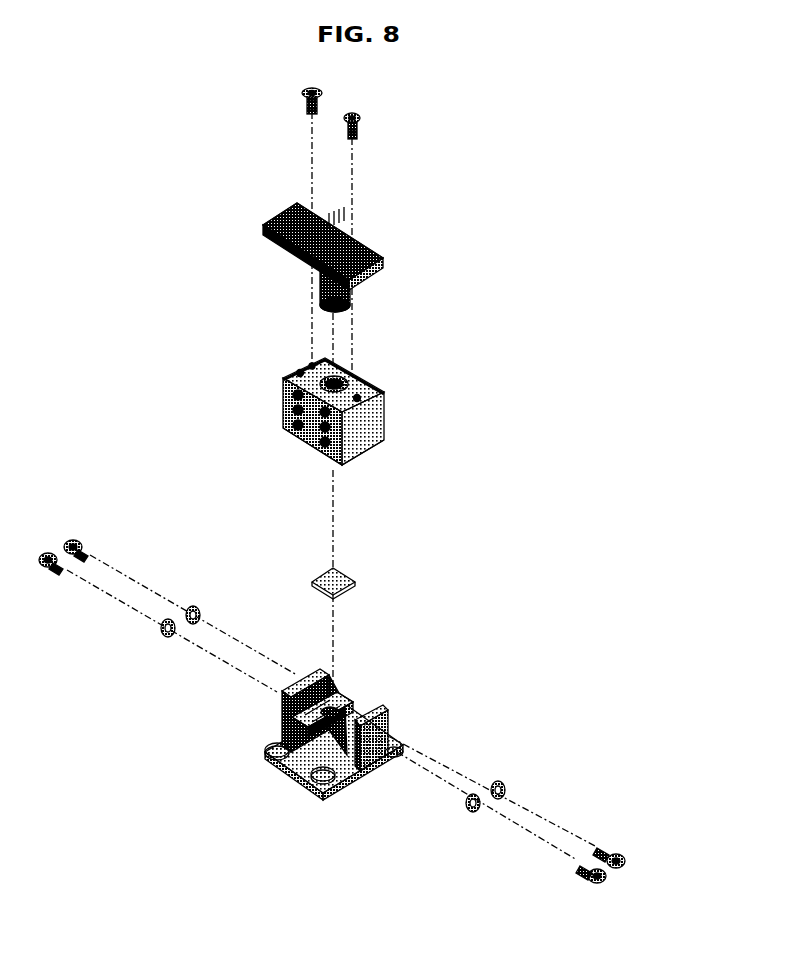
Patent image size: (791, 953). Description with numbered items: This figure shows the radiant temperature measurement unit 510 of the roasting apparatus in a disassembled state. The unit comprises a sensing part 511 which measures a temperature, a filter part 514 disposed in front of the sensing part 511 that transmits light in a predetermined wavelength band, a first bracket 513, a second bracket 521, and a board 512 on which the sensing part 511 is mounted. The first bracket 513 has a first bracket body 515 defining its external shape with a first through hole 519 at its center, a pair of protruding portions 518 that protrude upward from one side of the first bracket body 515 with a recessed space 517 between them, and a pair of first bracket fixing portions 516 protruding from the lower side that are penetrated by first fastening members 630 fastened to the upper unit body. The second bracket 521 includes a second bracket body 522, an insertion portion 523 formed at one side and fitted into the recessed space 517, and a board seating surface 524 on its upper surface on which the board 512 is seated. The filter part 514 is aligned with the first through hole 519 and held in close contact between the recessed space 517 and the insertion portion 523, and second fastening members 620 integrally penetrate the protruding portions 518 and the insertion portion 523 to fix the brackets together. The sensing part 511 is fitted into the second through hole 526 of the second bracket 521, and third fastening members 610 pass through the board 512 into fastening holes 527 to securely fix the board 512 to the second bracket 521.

The radiant temperature measurement unit 510 is at (455, 454).
The sensing part 511 is at (352, 300).
The board 512 is at (378, 245).
The first bracket 513 is at (331, 772).
The filter part 514 is at (360, 585).
The first bracket body 515 is at (277, 733).
The first bracket fixing portion 516 is at (287, 780).
The recessed space 517 is at (357, 703).
The protruding portions 518 is at (389, 716).
The first through hole 519 is at (345, 700).
The second bracket 521 is at (389, 445).
The second bracket body 522 is at (283, 415).
The insertion portion 523 is at (293, 440).
The board seating surface 524 is at (385, 383).
The second through hole 526 is at (315, 362).
The fastening holes 527 is at (307, 369).
The third fastening members 610 is at (358, 130).
The second fastening members 620 is at (613, 852).
The first fastening members 630 is at (313, 800).